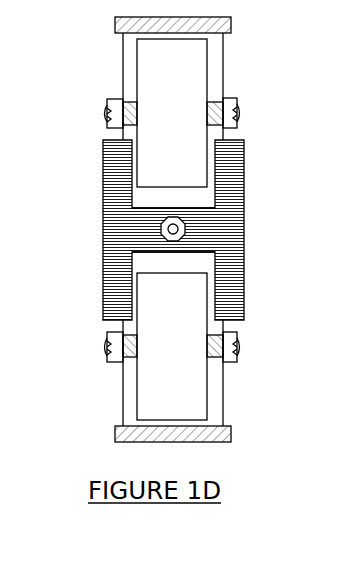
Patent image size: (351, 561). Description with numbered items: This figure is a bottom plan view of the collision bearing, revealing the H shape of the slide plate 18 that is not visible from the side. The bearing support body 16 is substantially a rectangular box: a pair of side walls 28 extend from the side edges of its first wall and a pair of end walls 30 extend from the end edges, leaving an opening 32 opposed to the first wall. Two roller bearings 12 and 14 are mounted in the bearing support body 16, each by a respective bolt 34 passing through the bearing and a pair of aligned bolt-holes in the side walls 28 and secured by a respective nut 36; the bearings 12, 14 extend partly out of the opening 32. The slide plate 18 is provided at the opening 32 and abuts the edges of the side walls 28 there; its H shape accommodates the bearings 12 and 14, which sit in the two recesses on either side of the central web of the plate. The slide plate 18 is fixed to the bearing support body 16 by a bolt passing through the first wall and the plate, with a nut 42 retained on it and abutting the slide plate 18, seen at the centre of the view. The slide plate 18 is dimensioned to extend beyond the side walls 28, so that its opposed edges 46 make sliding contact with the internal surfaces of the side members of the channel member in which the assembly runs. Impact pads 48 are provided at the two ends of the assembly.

The roller bearing 12 is at (169, 68).
The roller bearing 14 is at (152, 397).
The bearing support body 16 is at (224, 382).
The slide plate 18 is at (124, 227).
The side walls 28 is at (123, 85).
The end walls 30 is at (131, 34).
The opening 32 is at (212, 63).
The bolt 34 is at (231, 113).
The nut 36 is at (114, 113).
The nut 42 is at (183, 230).
The opposed edges 46 is at (103, 278).
The impact pads 48 is at (215, 25).